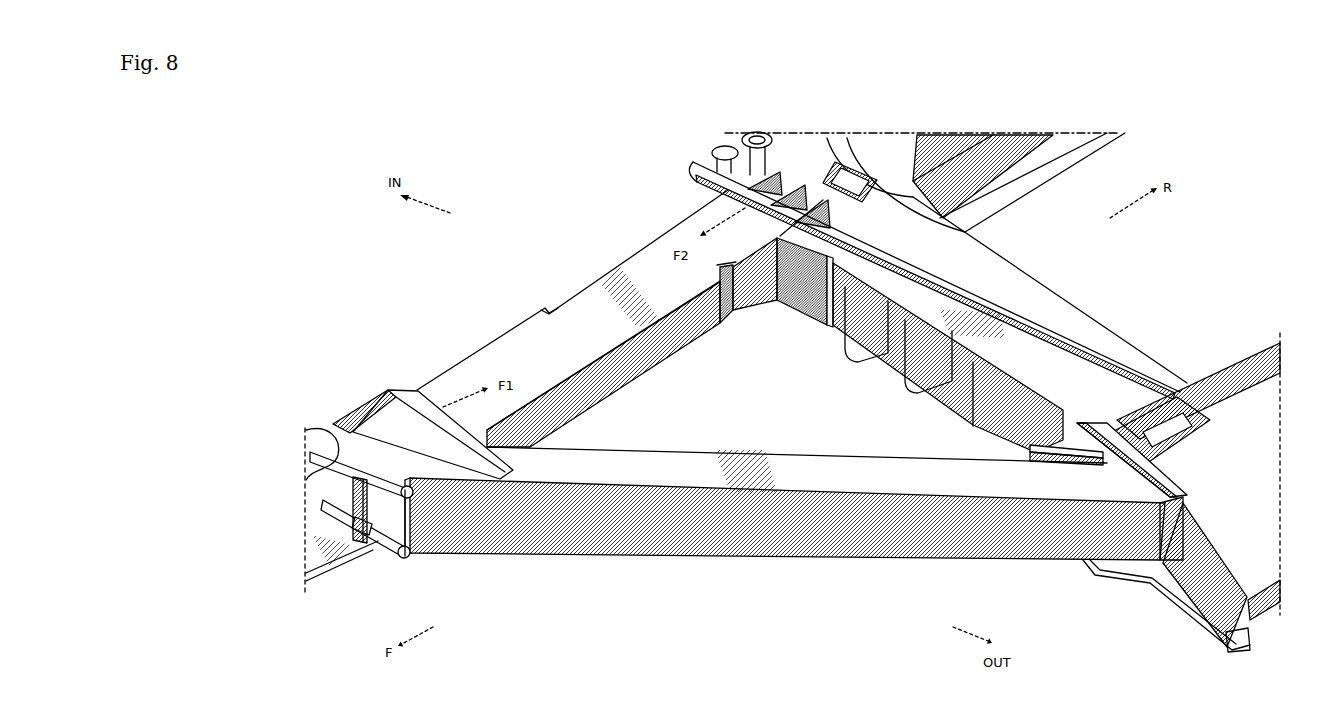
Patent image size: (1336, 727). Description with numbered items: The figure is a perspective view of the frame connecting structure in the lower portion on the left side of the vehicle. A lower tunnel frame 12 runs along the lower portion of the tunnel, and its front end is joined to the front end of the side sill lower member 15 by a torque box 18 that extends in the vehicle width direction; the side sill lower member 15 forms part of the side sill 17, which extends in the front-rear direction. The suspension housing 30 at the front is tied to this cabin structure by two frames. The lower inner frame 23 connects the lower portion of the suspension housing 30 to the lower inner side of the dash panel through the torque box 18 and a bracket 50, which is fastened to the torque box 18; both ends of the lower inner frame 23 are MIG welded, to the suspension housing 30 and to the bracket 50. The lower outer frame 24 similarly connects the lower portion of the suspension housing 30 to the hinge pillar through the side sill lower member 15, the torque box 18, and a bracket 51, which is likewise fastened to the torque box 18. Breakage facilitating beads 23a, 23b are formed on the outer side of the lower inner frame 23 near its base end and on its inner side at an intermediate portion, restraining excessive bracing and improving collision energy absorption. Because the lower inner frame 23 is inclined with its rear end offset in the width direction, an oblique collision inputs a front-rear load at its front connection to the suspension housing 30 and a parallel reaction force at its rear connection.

The lower tunnel frame 12 is at (957, 140).
The side sill lower member 15 is at (1245, 500).
The side sill 17 is at (1246, 355).
The torque box 18 is at (887, 363).
The lower inner frame 23 is at (651, 259).
The breakage facilitating bead 23a is at (710, 320).
The breakage facilitating bead 23b is at (551, 308).
The lower outer frame 24 is at (777, 467).
The suspension housing 30 is at (361, 410).
The bracket 50 is at (797, 290).
The bracket 51 is at (1064, 413).